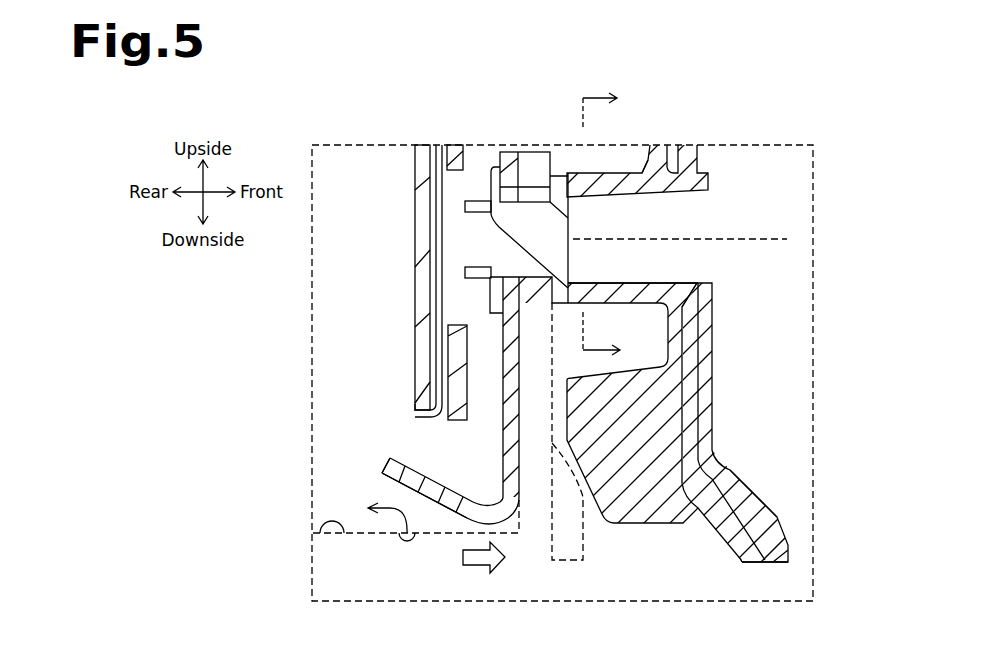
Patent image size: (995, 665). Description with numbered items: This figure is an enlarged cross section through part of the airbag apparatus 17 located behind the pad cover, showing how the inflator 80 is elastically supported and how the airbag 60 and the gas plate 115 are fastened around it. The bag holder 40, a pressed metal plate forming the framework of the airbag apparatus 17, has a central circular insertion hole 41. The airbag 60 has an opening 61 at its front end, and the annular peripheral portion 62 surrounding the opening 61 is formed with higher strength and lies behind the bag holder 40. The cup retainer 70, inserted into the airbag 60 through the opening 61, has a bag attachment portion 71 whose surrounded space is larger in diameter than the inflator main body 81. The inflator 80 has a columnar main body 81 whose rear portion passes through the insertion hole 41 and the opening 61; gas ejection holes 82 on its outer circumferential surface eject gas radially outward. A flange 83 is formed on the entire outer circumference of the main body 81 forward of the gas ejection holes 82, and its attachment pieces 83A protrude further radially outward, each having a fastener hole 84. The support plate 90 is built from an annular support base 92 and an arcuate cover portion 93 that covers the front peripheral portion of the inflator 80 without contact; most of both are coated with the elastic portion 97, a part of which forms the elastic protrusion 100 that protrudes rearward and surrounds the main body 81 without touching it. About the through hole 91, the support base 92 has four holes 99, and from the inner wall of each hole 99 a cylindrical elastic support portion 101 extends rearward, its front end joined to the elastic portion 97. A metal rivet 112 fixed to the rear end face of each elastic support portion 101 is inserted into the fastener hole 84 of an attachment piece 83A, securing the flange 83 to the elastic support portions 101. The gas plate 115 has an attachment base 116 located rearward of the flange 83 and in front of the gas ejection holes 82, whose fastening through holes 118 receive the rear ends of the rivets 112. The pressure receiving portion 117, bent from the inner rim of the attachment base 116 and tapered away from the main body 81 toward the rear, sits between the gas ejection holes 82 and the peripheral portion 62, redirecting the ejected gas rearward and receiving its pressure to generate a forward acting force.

The airbag apparatus 17 is at (323, 354).
The bag holder 40 is at (453, 145).
The insertion hole 41 is at (468, 419).
The airbag 60 is at (377, 270).
The opening 61 is at (416, 410).
The peripheral portion 62 is at (437, 146).
The cup retainer 70 is at (391, 277).
The bag attachment portion 71 is at (415, 239).
The inflator 80 is at (299, 581).
The main body 81 is at (318, 530).
The gas ejection holes 82 is at (406, 541).
The flange 83 is at (518, 365).
The attachment pieces 83A is at (562, 160).
The fastener hole 84 is at (568, 283).
The support plate 90 is at (682, 157).
The through hole 91 is at (760, 562).
The support base 92 is at (700, 385).
The cover portion 93 is at (749, 509).
The elastic portion 97 is at (702, 333).
The holes 99 is at (698, 290).
The elastic protrusion 100 is at (668, 514).
The elastic support portions 101 is at (640, 168).
The rivet 112 is at (566, 218).
The gas plate 115 is at (428, 456).
The attachment base 116 is at (508, 445).
The pressure receiving portion 117 is at (472, 499).
The fastening through holes 118 is at (493, 275).